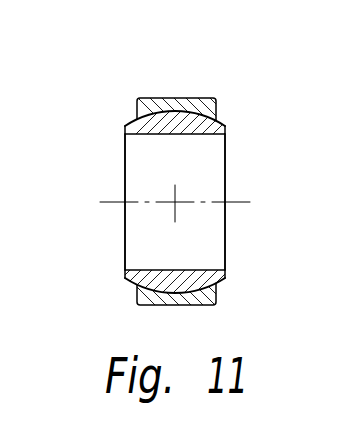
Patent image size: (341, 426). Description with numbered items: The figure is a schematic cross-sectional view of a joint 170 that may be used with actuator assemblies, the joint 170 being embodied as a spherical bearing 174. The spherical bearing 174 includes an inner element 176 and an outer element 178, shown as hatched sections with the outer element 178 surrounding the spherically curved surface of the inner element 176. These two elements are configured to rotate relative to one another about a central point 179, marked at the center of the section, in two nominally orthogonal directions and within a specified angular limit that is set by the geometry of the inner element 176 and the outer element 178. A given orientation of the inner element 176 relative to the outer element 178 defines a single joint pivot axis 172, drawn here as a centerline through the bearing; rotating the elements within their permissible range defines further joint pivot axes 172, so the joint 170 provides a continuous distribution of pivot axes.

The joint 170 is at (87, 92).
The spherical bearing 174 is at (92, 163).
The inner element 176 is at (226, 125).
The outer element 178 is at (202, 99).
The joint pivot axis 172 is at (205, 200).
The central point 179 is at (177, 203).